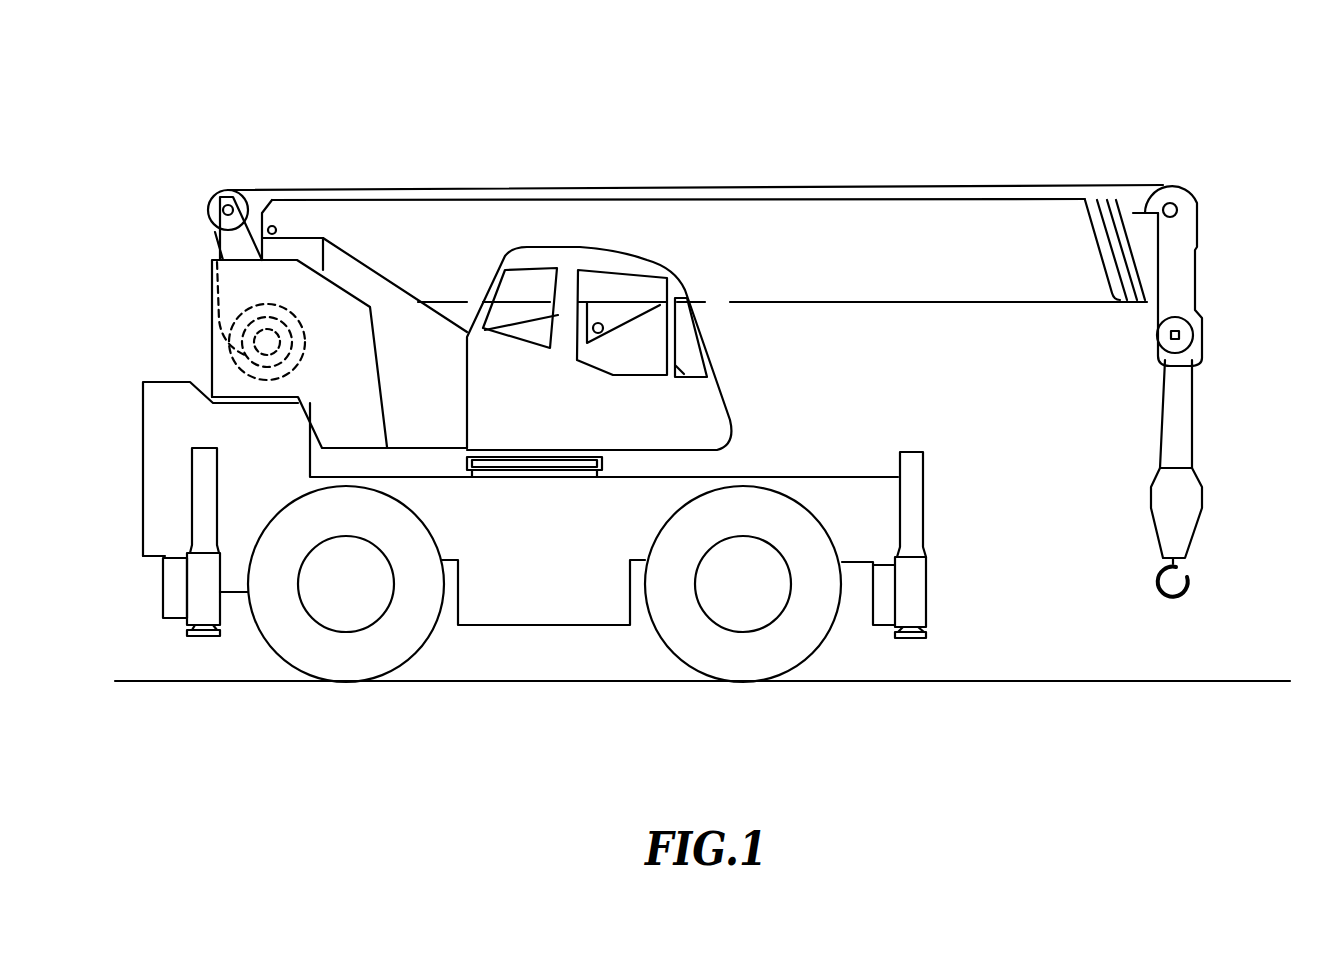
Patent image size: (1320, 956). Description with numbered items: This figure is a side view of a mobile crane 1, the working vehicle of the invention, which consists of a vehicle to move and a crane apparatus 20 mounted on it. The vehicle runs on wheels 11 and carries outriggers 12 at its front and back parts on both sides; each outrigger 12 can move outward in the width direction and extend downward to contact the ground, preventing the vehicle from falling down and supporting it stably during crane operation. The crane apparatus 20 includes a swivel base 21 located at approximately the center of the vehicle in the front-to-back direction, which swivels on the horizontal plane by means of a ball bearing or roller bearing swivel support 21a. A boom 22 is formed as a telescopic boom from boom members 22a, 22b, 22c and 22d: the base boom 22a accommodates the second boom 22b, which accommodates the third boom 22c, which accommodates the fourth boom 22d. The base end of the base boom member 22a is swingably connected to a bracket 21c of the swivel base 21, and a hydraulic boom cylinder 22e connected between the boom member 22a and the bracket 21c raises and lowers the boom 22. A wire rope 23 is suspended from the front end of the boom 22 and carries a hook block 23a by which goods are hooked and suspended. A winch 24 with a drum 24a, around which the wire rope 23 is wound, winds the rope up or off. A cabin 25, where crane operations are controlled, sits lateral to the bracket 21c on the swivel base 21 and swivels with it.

The mobile crane 1 is at (348, 115).
The wheels 11 is at (323, 660).
The outriggers 12 is at (212, 603).
The crane apparatus 20 is at (513, 123).
The swivel base 21 is at (448, 458).
The swivel support 21a is at (560, 465).
The bracket 21c is at (327, 263).
The boom 22 is at (687, 185).
The base boom member 22a is at (583, 217).
The second boom 22b is at (1133, 302).
The third boom 22c is at (1145, 303).
The fourth boom 22d is at (1177, 232).
The boom cylinder 22e is at (535, 327).
The wire rope 23 is at (880, 185).
The hook block 23a is at (1168, 535).
The winch 24 is at (212, 305).
The drum 24a is at (225, 337).
The cabin 25 is at (680, 370).